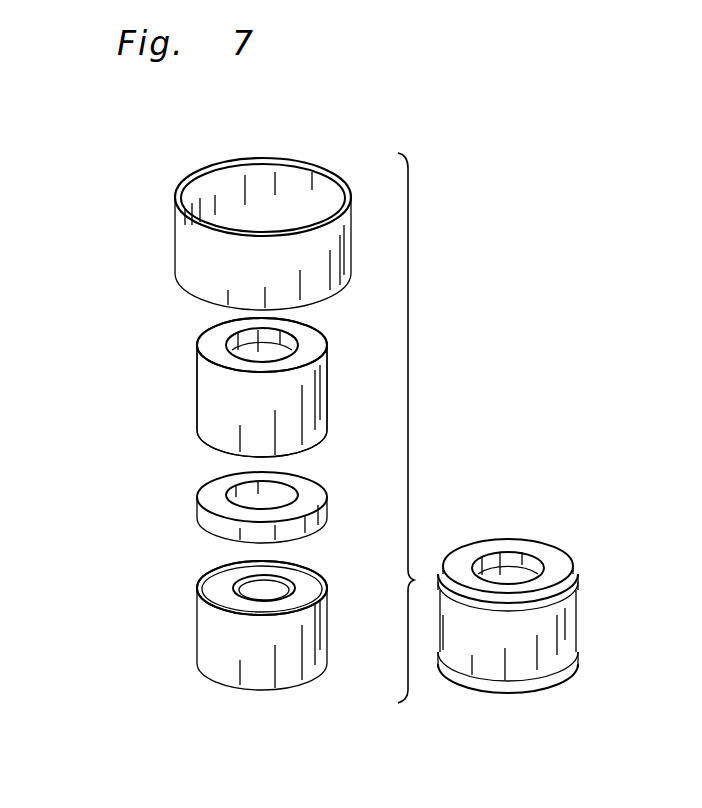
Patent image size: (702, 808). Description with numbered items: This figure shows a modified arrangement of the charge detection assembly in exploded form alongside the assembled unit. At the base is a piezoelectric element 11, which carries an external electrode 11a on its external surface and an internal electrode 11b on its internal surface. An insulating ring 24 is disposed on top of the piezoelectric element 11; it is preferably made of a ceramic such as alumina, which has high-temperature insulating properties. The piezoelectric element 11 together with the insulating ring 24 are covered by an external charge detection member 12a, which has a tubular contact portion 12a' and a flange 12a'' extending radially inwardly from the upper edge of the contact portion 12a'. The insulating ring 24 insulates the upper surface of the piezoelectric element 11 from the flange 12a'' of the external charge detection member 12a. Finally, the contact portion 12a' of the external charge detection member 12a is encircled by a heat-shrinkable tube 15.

The heat-shrinkable tube 15 is at (183, 248).
The external charge detection member 12a is at (186, 387).
The tubular contact portion 12a' is at (186, 401).
The flange 12a'' is at (186, 334).
The insulating ring 24 is at (205, 521).
The piezoelectric element 11 is at (203, 607).
The external electrode 11a is at (230, 600).
The internal electrode 11b is at (222, 566).